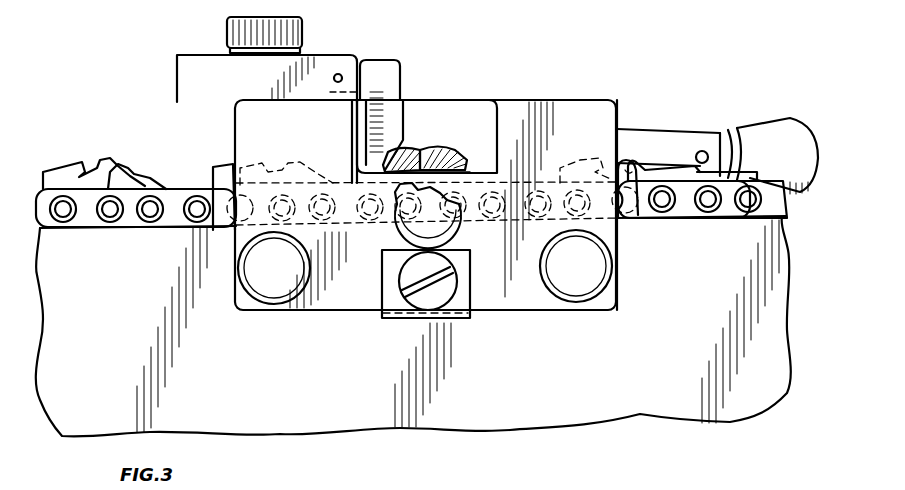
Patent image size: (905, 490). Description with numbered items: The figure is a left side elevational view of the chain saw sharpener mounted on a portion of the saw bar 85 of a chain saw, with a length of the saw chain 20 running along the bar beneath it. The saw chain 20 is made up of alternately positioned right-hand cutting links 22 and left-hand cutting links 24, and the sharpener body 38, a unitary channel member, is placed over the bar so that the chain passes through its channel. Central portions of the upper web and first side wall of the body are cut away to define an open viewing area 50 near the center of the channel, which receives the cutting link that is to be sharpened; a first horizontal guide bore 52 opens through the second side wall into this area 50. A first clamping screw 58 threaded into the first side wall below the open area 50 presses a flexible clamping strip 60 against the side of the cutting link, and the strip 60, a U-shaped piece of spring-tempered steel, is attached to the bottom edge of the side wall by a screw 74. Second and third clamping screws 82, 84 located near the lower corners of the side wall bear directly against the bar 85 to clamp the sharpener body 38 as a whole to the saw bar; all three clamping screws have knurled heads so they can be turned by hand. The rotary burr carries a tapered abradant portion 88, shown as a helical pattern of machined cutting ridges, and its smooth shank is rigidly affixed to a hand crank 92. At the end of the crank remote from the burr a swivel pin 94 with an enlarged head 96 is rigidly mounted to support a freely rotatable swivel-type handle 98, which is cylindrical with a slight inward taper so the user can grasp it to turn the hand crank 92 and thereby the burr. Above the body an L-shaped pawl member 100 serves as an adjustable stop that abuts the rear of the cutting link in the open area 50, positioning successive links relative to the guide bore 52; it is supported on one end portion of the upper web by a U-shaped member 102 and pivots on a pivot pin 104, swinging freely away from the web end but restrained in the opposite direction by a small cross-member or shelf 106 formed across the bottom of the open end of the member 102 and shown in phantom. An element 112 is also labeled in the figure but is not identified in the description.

The saw chain 20 is at (97, 158).
The right-hand cutting link 22 is at (421, 150).
The left-hand cutting link 24 is at (217, 167).
The sharpener body 38 is at (335, 303).
The open viewing area 50 is at (491, 100).
The first horizontal guide bore 52 is at (450, 150).
The first clamping screw 58 is at (463, 233).
The flexible clamping strip 60 is at (458, 303).
The screw 74 is at (420, 300).
The second clamping screw 82 is at (593, 272).
The third clamping screw 84 is at (255, 280).
The bar 85 is at (555, 387).
The tapered abradant portion 88 is at (445, 150).
The hand crank 92 is at (647, 133).
The swivel pin 94 is at (700, 151).
The enlarged head 96 is at (804, 481).
The swivel-type handle 98 is at (763, 130).
The L-shaped pawl member 100 is at (400, 75).
The U-shaped member 102 is at (178, 82).
The pivot pin 104 is at (341, 74).
The cross-member or shelf 106 is at (309, 126).
The adjusting knob 112 is at (227, 30).